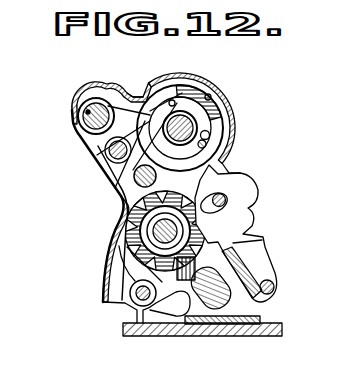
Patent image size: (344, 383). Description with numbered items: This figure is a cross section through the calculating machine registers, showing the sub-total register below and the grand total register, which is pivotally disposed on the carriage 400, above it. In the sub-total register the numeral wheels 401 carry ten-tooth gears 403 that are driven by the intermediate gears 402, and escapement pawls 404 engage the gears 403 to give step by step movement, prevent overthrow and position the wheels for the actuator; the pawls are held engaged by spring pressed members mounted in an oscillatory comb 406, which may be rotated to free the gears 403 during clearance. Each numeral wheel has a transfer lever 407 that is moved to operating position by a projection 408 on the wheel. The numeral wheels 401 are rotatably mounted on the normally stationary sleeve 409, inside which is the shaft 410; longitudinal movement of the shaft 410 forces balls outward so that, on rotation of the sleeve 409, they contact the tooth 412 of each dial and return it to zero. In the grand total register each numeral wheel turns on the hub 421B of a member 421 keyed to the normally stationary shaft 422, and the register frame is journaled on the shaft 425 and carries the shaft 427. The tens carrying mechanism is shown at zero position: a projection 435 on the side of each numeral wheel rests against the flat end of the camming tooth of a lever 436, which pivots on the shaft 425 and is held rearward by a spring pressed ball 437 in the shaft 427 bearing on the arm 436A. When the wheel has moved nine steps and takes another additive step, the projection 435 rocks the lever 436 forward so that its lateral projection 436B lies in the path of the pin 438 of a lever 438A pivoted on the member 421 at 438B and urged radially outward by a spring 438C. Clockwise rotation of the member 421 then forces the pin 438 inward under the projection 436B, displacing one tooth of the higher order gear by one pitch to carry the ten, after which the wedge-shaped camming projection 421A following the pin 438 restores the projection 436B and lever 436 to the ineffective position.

The carriage 400 is at (122, 329).
The numeral wheel 401 is at (113, 215).
The intermediate gear 402 is at (226, 161).
The ten-tooth gear 403 is at (122, 227).
The escapement pawl 404 is at (117, 262).
The oscillatory comb 406 is at (193, 318).
The transfer lever 407 is at (248, 184).
The projection 408 is at (172, 207).
The sleeve 409 is at (127, 268).
The shaft 410 is at (140, 258).
The tooth 412 is at (121, 203).
The member 421 is at (201, 90).
The wedge-shaped camming projection 421A is at (168, 84).
The hub 421B is at (225, 105).
The shaft 422 is at (133, 177).
The shaft 425 is at (108, 153).
The shaft 427 is at (77, 118).
The projection 435 is at (192, 87).
The lever 436 is at (98, 137).
The arm 436A is at (93, 100).
The lateral projection 436B is at (137, 94).
The spring pressed ball 437 is at (87, 112).
The pin 438 is at (212, 99).
The lever 438A is at (231, 111).
The pivot 438B is at (211, 133).
The spring 438C is at (207, 146).